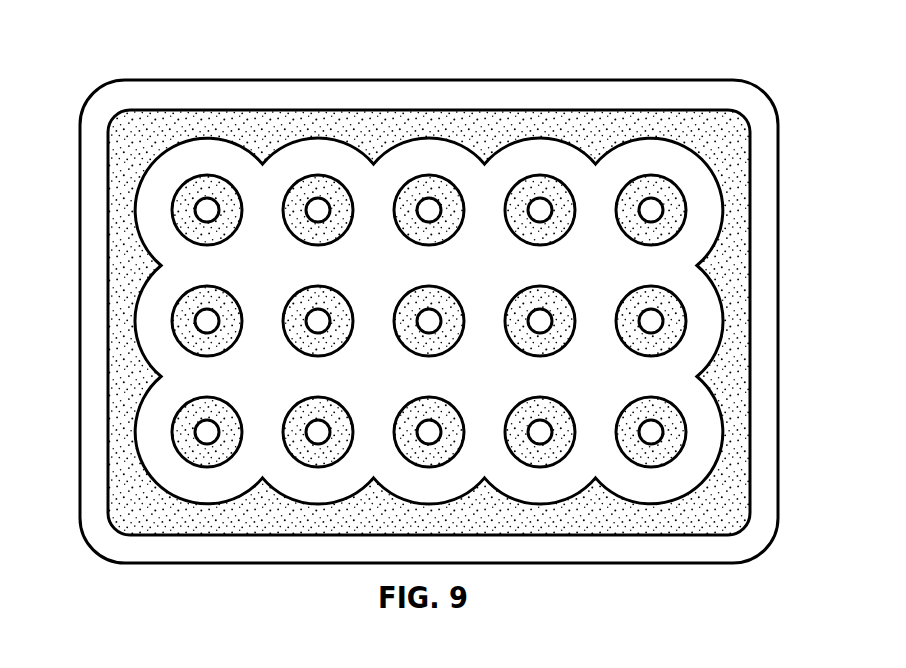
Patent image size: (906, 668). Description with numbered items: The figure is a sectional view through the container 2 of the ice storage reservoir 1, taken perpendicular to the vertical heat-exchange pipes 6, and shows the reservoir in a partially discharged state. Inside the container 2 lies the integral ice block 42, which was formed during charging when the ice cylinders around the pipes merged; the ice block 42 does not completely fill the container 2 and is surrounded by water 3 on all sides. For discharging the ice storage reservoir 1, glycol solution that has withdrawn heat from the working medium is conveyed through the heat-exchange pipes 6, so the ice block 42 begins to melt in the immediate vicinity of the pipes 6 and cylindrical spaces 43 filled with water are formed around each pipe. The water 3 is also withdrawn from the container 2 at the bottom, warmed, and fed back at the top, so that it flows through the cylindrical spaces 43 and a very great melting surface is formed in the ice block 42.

The ice storage reservoir 1 is at (70, 96).
The container 2 is at (265, 93).
The water 3 is at (132, 147).
The ice block 42 is at (487, 188).
The cylindrical spaces 43 is at (672, 207).
The heat-exchange pipes 6 is at (650, 210).